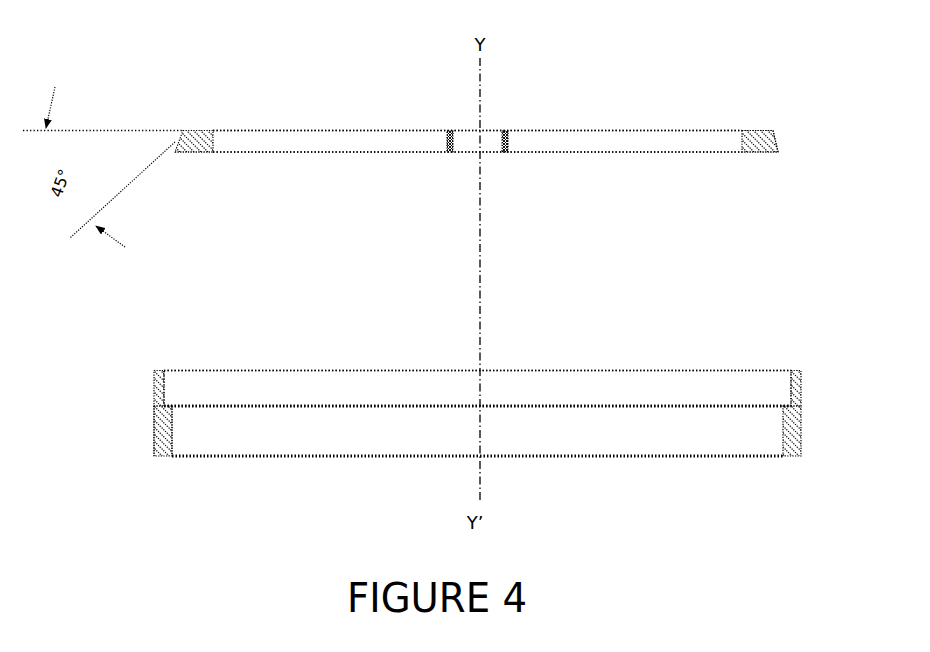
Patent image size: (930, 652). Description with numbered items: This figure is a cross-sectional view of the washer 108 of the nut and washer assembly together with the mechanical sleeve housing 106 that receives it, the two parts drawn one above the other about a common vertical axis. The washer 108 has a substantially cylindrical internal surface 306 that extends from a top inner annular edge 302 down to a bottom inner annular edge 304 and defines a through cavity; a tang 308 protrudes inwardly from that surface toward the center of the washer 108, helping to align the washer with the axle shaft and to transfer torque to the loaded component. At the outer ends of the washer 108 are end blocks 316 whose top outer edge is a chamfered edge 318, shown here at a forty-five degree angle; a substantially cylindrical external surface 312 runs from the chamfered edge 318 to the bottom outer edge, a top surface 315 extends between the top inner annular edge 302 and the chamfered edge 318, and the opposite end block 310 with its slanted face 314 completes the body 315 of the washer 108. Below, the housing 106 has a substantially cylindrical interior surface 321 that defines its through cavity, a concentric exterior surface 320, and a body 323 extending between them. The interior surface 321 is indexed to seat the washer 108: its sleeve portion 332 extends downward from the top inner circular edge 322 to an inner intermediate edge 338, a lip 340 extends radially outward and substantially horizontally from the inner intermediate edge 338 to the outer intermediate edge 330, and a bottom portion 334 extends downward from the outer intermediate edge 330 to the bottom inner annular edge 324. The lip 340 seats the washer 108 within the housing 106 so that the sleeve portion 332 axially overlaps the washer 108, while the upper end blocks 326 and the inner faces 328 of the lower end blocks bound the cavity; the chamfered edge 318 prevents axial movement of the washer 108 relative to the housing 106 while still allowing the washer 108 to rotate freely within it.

The housing 106 is at (461, 413).
The washer 108 is at (443, 147).
The top inner annular edge 302 is at (298, 130).
The bottom inner annular edge 304 is at (365, 152).
The internal surface 306 is at (583, 142).
The tang 308 is at (493, 138).
The right end block 310 is at (743, 147).
The external surface 312 is at (778, 145).
The slanted outer face of right end block 314 is at (775, 132).
The body 315 is at (754, 130).
The top surface 316 is at (198, 130).
The chamfered edge 318 is at (197, 153).
The exterior surface 320 is at (154, 425).
The interior surface 321 is at (190, 386).
The top inner circular edge 322 is at (598, 370).
The body 323 is at (162, 447).
The bottom inner annular edge 324 is at (625, 458).
The left upper end block 326 is at (166, 380).
The inner face of left lower block 328 is at (170, 437).
The outer intermediate edge 330 is at (512, 406).
The sleeve portion 332 is at (389, 383).
The bottom portion 334 is at (373, 433).
The inner intermediate edge 338 is at (792, 406).
The lip 340 is at (787, 408).